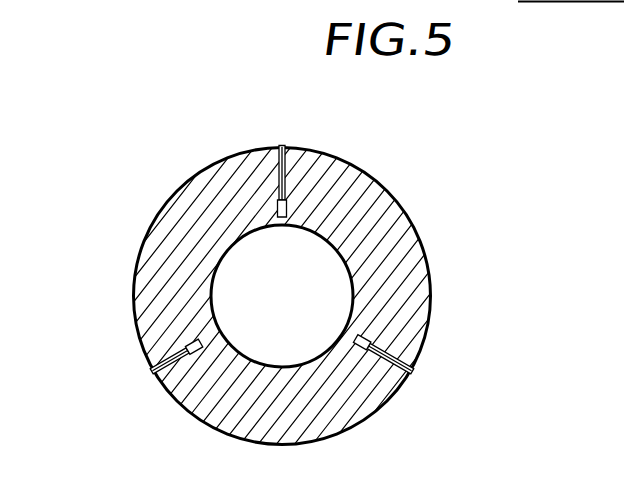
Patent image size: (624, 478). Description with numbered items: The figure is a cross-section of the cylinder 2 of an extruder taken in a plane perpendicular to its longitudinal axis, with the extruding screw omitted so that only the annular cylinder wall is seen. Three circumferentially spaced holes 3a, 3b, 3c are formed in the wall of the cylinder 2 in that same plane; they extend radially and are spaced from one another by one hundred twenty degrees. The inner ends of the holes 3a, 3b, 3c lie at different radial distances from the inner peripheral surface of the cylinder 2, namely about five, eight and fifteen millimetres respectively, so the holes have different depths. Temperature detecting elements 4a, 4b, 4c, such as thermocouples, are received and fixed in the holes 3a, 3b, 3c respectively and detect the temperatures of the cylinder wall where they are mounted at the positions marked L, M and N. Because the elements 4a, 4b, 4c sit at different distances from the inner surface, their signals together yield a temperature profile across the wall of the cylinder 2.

The cylinder 2 is at (388, 214).
The first temperature detecting hole 3a is at (313, 189).
The second temperature detecting hole 3b is at (365, 363).
The third temperature detecting hole 3c is at (196, 364).
The temperature detecting element 4a is at (284, 219).
The temperature detecting element 4b is at (352, 339).
The temperature detecting element 4c is at (200, 346).